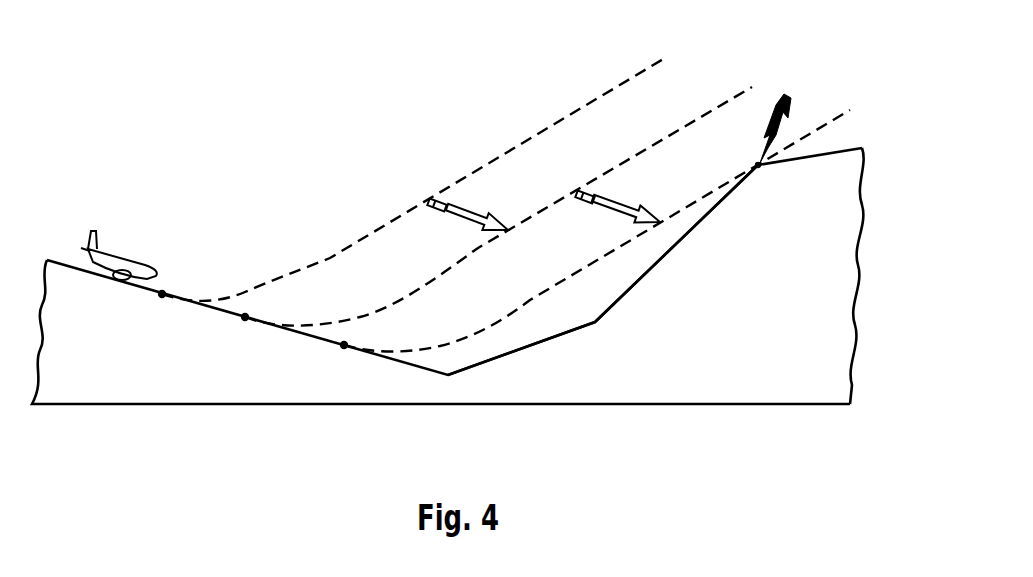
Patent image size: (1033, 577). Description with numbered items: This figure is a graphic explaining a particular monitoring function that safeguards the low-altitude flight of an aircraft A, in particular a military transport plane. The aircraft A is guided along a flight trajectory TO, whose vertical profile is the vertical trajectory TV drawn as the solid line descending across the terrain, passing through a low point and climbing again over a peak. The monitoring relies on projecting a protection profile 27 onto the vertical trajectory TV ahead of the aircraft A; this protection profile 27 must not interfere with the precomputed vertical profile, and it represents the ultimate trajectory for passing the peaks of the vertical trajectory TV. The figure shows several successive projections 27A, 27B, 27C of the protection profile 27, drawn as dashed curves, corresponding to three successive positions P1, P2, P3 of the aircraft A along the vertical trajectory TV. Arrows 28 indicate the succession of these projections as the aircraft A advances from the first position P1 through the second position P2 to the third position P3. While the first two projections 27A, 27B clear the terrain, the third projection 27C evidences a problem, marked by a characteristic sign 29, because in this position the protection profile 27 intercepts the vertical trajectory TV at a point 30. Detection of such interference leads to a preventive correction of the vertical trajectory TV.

The protection profile 27 is at (457, 151).
The first projection of the protection profile 27A is at (670, 52).
The second projection of the protection profile 27B is at (755, 82).
The third projection of the protection profile 27C is at (828, 114).
The arrows 28 is at (468, 208).
The characteristic sign 29 is at (790, 100).
The point 30 is at (770, 182).
The aircraft A is at (127, 267).
The first position of the aircraft P1 is at (158, 297).
The second position of the aircraft P2 is at (245, 320).
The third position of the aircraft P3 is at (346, 348).
The flight trajectory TO is at (335, 361).
The vertical trajectory TV is at (618, 300).